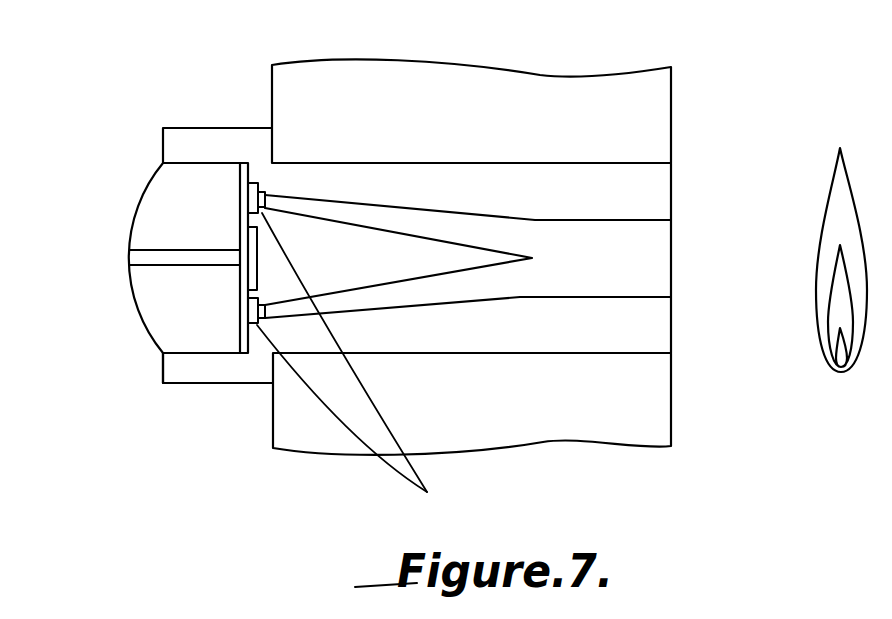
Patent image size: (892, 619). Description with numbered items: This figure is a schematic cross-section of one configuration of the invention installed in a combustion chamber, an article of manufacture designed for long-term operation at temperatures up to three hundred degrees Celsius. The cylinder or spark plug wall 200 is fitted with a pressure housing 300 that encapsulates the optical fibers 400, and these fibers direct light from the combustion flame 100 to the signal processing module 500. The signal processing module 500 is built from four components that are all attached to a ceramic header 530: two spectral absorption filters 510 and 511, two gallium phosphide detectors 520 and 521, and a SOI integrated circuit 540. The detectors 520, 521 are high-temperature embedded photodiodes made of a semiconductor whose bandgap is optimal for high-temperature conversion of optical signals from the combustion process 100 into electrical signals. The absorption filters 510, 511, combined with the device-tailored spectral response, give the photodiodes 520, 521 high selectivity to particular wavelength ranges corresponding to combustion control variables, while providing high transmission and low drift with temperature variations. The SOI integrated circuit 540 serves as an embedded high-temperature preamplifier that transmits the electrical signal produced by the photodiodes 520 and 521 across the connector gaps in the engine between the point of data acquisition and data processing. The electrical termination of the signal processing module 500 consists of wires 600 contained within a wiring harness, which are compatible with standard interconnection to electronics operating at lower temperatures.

The combustion flame 100 is at (827, 195).
The cylinder or spark plug wall 200 is at (540, 75).
The pressure housing 300 is at (533, 188).
The optical fibers 400 is at (462, 228).
The signal processing module 500 is at (167, 300).
The spectral absorption filter 510 is at (268, 205).
The spectral absorption filter 511 is at (330, 298).
The gallium phosphide detector 520 is at (425, 367).
The gallium phosphide detector 521 is at (427, 492).
The ceramic header 530 is at (173, 337).
The SOI integrated circuit 540 is at (253, 245).
The wires 600 is at (130, 265).